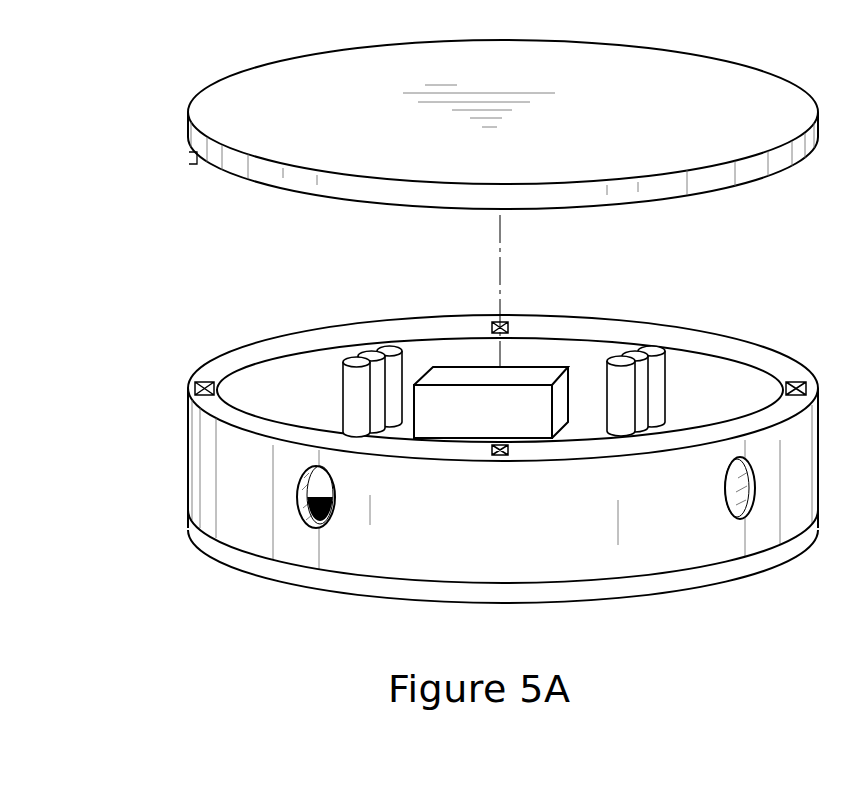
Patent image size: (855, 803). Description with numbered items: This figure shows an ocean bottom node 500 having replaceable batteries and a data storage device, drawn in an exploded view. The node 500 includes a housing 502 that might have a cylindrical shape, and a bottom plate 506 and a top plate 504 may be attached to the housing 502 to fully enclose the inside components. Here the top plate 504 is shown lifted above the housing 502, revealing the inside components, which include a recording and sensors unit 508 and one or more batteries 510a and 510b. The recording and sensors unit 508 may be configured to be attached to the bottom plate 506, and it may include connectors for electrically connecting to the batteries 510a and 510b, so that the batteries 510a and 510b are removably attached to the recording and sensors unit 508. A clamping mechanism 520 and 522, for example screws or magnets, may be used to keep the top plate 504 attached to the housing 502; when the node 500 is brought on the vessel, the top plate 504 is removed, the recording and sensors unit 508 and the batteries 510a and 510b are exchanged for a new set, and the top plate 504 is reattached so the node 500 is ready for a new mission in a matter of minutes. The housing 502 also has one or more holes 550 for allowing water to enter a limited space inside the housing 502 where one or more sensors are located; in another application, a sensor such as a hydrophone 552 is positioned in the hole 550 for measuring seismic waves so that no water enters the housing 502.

The node 500 is at (170, 285).
The housing 502 is at (200, 456).
The top plate 504 is at (193, 132).
The bottom plate 506 is at (212, 550).
The recording and sensors unit 508 is at (528, 373).
The battery 510a is at (379, 367).
The battery 510b is at (652, 352).
The clamping mechanism 520 is at (495, 321).
The clamping mechanism 522 is at (197, 165).
The hole 550 is at (307, 521).
The hydrophone 552 is at (323, 517).